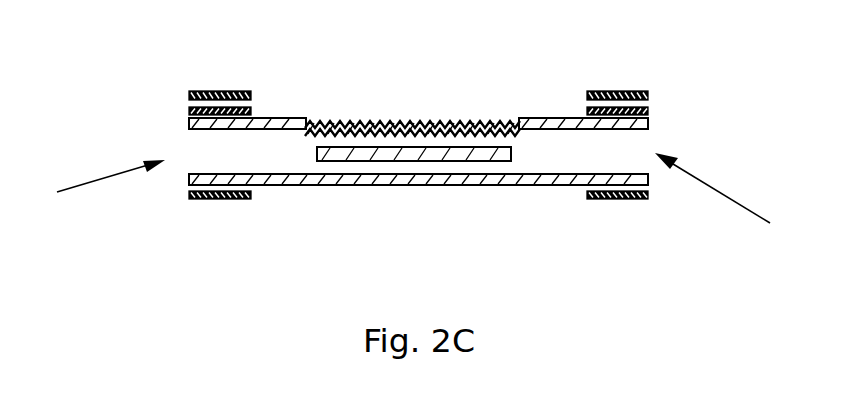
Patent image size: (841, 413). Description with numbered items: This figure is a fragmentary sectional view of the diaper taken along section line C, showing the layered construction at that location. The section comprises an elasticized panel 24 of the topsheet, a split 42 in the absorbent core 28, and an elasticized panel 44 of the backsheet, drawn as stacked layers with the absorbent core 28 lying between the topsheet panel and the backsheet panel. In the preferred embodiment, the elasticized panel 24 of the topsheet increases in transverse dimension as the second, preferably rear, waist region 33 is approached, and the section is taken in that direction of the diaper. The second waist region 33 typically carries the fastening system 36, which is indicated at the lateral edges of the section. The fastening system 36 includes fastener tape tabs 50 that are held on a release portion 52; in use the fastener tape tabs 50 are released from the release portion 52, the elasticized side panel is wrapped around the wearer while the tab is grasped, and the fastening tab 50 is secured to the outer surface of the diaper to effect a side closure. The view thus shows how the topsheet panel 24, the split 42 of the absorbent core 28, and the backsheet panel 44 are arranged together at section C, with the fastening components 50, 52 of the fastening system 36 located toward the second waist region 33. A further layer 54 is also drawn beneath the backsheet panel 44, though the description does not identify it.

The corrugated / grating region of upper substrate 24 is at (434, 122).
The liquid crystal cell / spacer layer 28 is at (357, 150).
The incident light direction 33 is at (731, 197).
The incident light direction 36 is at (93, 185).
The alignment layer 42 is at (413, 150).
The lower substrate 44 is at (422, 186).
The upper electrode layer 50 is at (200, 91).
The upper conductive layer 52 is at (198, 110).
The lower electrode layer 54 is at (194, 200).